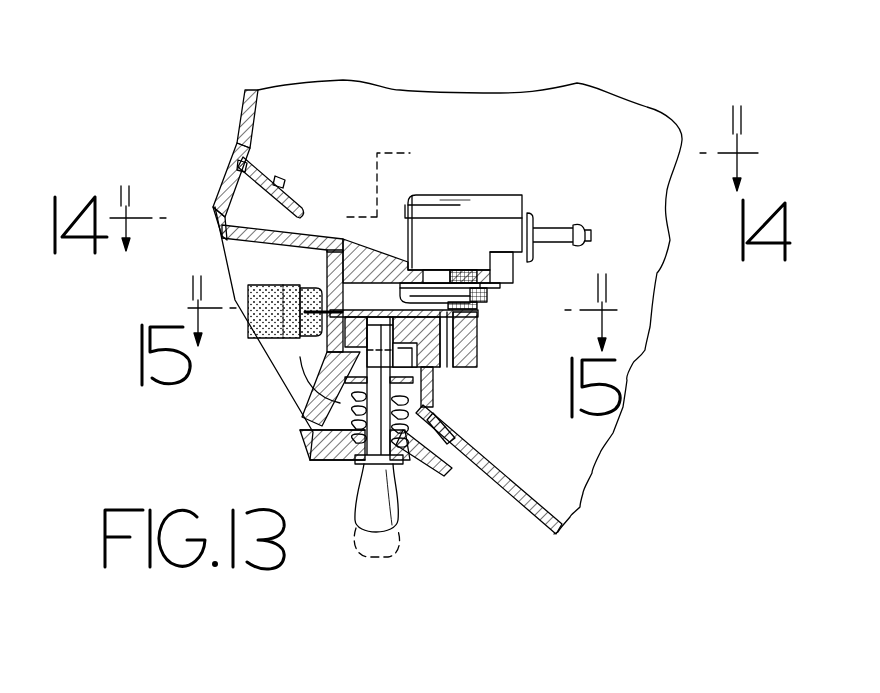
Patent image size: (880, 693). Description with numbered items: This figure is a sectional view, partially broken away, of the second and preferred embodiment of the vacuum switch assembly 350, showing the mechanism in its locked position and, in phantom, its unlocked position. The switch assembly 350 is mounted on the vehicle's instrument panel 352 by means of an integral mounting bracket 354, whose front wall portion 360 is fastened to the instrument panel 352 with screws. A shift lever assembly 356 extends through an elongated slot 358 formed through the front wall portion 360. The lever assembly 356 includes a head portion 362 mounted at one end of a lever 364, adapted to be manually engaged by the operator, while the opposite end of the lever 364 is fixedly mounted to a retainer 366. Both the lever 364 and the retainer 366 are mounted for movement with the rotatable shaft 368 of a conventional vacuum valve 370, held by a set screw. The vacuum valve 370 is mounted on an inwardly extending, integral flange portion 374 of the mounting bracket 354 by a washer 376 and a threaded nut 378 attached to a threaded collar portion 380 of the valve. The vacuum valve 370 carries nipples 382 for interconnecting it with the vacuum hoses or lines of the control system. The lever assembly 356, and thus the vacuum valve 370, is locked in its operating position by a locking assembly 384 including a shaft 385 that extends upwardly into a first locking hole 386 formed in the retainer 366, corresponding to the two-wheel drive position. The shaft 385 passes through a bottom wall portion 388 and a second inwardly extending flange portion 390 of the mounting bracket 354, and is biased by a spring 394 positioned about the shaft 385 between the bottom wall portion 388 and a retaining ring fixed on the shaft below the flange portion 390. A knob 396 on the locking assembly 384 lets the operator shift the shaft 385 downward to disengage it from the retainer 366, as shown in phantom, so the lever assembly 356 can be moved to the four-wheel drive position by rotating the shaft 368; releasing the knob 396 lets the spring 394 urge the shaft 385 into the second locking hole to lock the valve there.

The vacuum switch assembly 350 is at (528, 124).
The instrument panel 352 is at (246, 116).
The mounting bracket 354 is at (213, 192).
The shift lever assembly 356 is at (285, 348).
The elongated slot 358 is at (352, 272).
The front wall portion 360 is at (330, 264).
The head portion 362 is at (258, 320).
The lever 364 is at (378, 268).
The retainer 366 is at (472, 352).
The rotatable shaft 368 is at (466, 333).
The vacuum valve 370 is at (528, 204).
The flange portion 374 is at (393, 275).
The washer 376 is at (498, 287).
The threaded nut 378 is at (486, 303).
The threaded collar portion 380 is at (437, 271).
The nipples 382 is at (592, 236).
The locking assembly 384 is at (403, 514).
The shaft 385 is at (400, 462).
The first locking hole 386 is at (434, 369).
The bottom wall portion 388 is at (325, 444).
The second inwardly extending flange portion 390 is at (438, 412).
The spring 394 is at (345, 442).
The knob 396 is at (378, 524).